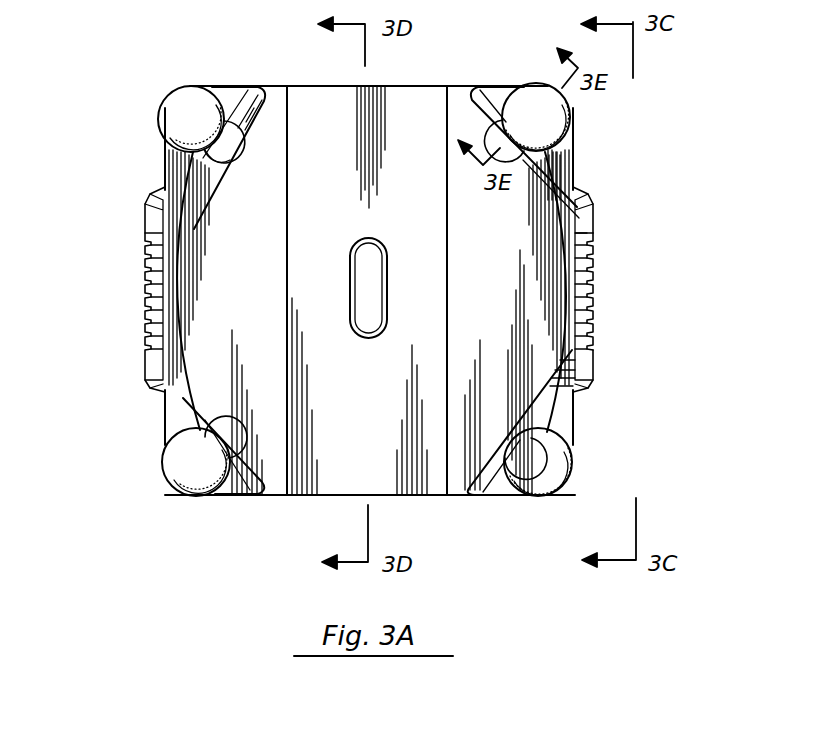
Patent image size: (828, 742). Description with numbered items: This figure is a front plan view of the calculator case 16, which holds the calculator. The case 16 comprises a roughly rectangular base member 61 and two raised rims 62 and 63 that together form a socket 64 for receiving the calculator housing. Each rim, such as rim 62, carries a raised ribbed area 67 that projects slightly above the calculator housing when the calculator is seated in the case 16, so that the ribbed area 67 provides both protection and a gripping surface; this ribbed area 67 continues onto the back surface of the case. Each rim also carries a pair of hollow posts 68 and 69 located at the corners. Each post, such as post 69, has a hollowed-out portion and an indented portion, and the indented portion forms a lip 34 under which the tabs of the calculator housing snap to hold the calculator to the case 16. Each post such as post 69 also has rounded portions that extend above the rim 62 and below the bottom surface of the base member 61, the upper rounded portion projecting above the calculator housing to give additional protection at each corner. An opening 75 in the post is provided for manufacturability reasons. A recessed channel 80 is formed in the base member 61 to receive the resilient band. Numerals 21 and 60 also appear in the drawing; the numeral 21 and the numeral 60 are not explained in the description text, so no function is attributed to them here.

The calculator case 16 is at (560, 414).
The central slot 21 is at (383, 291).
The lip 34 is at (237, 158).
The circular plate 60 is at (259, 279).
The base member 61 is at (330, 498).
The raised rim 62 is at (570, 149).
The raised rim 63 is at (165, 158).
The socket 64 is at (540, 328).
The raised ribbed area 67 is at (592, 282).
The hollow post 68 is at (540, 468).
The hollow post 69 is at (531, 115).
The opening 75 is at (510, 152).
The recessed channel 80 is at (317, 117).